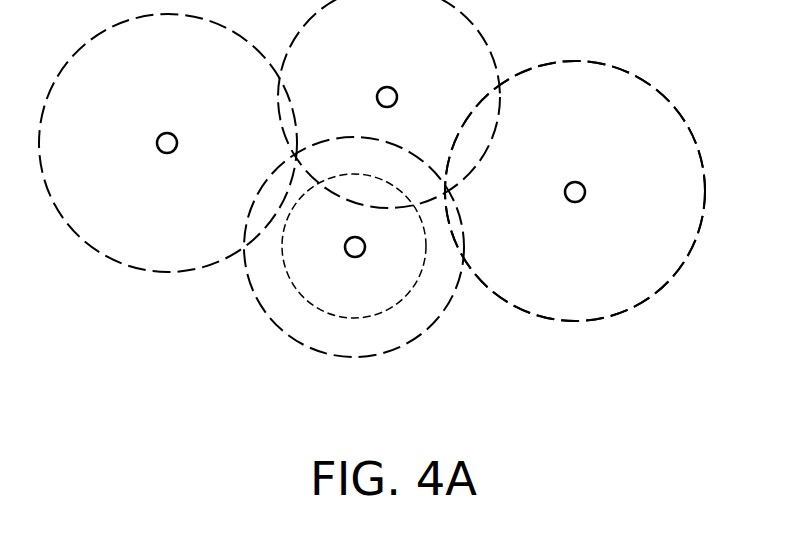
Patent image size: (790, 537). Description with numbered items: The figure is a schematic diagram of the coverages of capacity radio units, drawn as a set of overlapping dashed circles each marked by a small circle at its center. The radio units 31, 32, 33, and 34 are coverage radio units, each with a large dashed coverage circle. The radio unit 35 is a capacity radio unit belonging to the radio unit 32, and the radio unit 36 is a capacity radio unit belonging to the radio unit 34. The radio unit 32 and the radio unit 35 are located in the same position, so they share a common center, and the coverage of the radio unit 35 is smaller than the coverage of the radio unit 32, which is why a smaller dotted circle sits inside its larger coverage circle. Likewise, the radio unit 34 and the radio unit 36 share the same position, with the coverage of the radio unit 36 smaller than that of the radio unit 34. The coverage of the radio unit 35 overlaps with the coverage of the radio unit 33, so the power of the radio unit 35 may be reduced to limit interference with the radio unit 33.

The radio unit 31 is at (158, 133).
The radio unit 32 is at (347, 257).
The radio unit 33 is at (380, 87).
The radio unit 34 is at (567, 179).
The radio unit 35 is at (354, 246).
The radio unit 36 is at (575, 191).